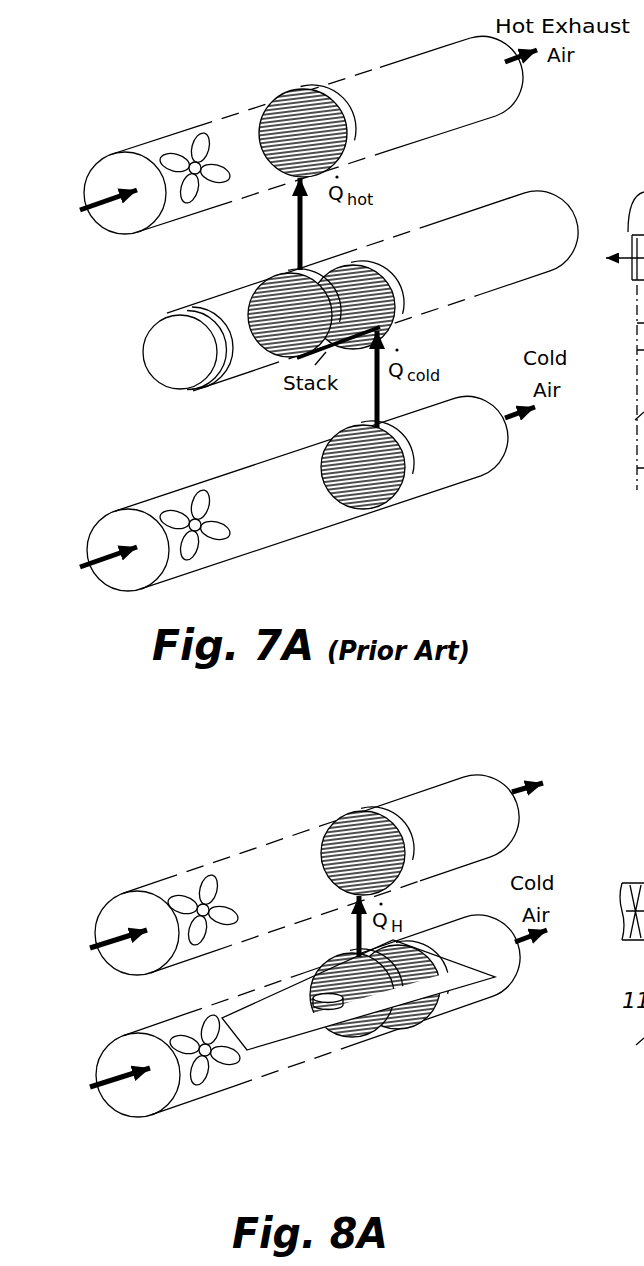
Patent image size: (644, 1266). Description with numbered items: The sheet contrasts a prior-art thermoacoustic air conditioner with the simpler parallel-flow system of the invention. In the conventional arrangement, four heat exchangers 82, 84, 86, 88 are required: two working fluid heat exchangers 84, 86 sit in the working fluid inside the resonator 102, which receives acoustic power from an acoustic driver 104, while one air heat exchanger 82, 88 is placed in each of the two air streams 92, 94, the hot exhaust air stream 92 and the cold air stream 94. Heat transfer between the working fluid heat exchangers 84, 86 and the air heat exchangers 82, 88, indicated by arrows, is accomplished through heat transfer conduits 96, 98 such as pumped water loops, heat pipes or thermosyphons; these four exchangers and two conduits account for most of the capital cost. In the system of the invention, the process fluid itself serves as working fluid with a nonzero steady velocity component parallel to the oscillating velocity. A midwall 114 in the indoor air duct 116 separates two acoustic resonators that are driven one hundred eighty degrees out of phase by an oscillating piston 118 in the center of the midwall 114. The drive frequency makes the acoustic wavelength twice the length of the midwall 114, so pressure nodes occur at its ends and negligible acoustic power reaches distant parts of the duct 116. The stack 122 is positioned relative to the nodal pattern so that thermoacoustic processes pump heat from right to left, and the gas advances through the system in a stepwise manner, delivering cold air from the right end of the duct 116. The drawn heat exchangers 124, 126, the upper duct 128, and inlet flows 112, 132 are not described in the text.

In FIG. 7A, the air heat exchanger 82 is at (284, 96).
In FIG. 7A, the working fluid heat exchanger 84 is at (292, 280).
In FIG. 7A, the working fluid heat exchanger 86 is at (392, 320).
In FIG. 7A, the air heat exchanger 88 is at (384, 505).
In FIG. 7A, the air stream 92 is at (288, 135).
In FIG. 7A, the air stream 94 is at (287, 496).
In FIG. 7A, the heat transfer conduit 96 is at (302, 246).
In FIG. 7A, the heat transfer conduit 98 is at (374, 412).
In FIG. 7A, the resonator 102 is at (526, 192).
In FIG. 7A, the acoustic driver 104 is at (178, 372).
In FIG. 8A, the cold air inlet flow 112 is at (96, 1091).
In FIG. 8A, the midwall 114 is at (268, 1047).
In FIG. 8A, the indoor air duct 116 is at (188, 1097).
In FIG. 8A, the oscillating piston 118 is at (327, 1012).
In FIG. 8A, the stack 122 is at (420, 1022).
In FIG. 8A, the hot heat exchanger 124 is at (358, 822).
In FIG. 8A, the stack heat exchanger 126 is at (393, 1033).
In FIG. 8A, the hot air duct 128 is at (437, 800).
In FIG. 8A, the hot air inlet flow 132 is at (94, 945).